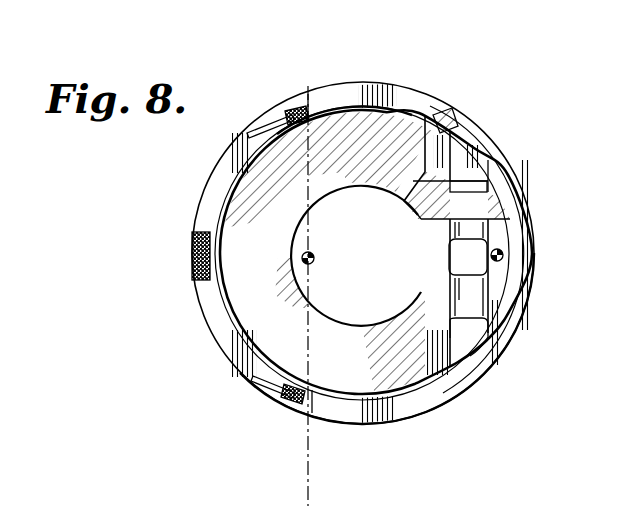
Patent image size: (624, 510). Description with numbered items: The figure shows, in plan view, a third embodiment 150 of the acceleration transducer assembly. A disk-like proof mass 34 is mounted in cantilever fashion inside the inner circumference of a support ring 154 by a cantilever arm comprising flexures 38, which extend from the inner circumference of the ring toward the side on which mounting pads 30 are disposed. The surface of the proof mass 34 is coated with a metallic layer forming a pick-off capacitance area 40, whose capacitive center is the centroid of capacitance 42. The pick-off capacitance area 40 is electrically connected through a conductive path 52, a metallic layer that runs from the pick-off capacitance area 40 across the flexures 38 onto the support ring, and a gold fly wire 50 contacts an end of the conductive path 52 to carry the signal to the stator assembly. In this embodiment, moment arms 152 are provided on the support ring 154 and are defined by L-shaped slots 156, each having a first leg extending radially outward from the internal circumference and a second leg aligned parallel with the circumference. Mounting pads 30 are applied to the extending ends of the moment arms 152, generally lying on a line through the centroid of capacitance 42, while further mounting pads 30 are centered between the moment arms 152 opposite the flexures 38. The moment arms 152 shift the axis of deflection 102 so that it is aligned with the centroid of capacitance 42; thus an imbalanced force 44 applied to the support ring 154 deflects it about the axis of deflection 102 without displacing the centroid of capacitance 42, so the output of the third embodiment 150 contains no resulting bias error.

The third embodiment 150 is at (178, 197).
The moment arms 152 is at (335, 88).
The support ring 154 is at (400, 412).
The L shaped slots 156 is at (265, 122).
The mounting pads 30 is at (193, 252).
The proof mass 34 is at (265, 337).
The pick-off capacitance area 40 is at (280, 229).
The centroid of capacitance 42 is at (314, 256).
The force 44 is at (503, 255).
The gold fly wire 50 is at (448, 107).
The conductive path 52 is at (483, 150).
The flexures 38 is at (485, 225).
The axis of deflection 102 is at (310, 326).